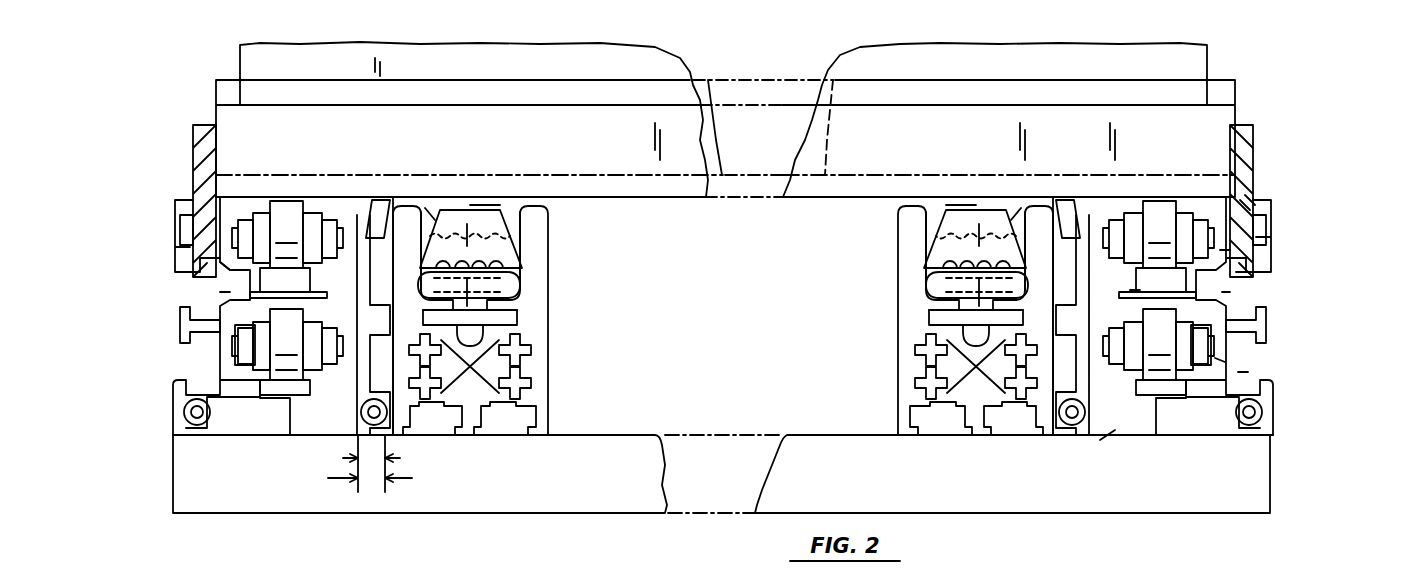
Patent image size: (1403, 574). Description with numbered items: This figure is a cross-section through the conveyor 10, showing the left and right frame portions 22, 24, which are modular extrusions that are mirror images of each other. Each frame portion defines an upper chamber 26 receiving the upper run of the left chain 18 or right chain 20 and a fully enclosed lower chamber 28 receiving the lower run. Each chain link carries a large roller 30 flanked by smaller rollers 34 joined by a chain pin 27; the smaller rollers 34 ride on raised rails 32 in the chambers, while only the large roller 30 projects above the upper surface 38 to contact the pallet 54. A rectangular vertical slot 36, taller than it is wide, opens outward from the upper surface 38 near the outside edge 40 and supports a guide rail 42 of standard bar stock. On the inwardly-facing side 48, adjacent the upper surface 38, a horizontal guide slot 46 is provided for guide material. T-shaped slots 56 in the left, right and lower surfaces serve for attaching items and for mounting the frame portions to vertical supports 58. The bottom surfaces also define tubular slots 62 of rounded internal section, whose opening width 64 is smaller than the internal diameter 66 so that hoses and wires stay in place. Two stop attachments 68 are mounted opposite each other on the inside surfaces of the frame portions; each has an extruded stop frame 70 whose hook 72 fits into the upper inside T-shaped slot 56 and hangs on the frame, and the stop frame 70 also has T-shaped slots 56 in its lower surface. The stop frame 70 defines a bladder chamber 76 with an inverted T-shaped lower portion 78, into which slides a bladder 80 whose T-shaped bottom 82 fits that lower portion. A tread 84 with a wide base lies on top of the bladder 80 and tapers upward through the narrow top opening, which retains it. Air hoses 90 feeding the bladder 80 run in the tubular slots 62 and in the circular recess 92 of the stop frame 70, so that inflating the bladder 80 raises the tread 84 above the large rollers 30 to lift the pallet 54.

The conveyor 10 is at (201, 56).
The left chain 18 is at (220, 210).
The right chain 20 is at (1250, 196).
The left frame portion 22 is at (165, 252).
The right frame portion 24 is at (1281, 242).
The upper chamber 26 is at (220, 268).
The chain pin 27 is at (1245, 200).
The lower chamber 28 is at (220, 292).
The large roller 30 is at (723, 290).
The raised rail 32 is at (1248, 272).
The smaller roller 34 is at (312, 212).
The vertical slot 36 is at (182, 220).
The upper surface 38 is at (250, 218).
The outside edge 40 is at (176, 205).
The guide rail 42 is at (193, 128).
The horizontal guide slot 46 is at (382, 212).
The inwardly-facing side 48 is at (428, 210).
The pallet 54 is at (1237, 100).
The T-shaped slot 56 is at (370, 205).
The vertical support 58 is at (780, 502).
The tubular slot 62 is at (190, 438).
The opening width 64 is at (400, 458).
The diameter 66 is at (185, 412).
The stop attachment 68 is at (588, 257).
The stop frame 70 is at (545, 232).
The hook 72 is at (1150, 298).
The bladder chamber 76 is at (522, 242).
The lower portion 78 is at (505, 310).
The bladder 80 is at (521, 286).
The T-shaped bottom 82 is at (490, 328).
The tread 84 is at (445, 214).
The air hose 90 is at (198, 425).
The circular recess 92 is at (470, 352).